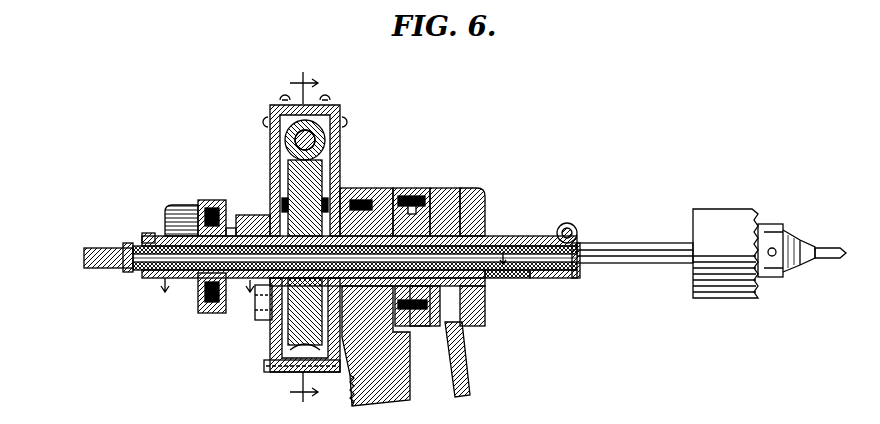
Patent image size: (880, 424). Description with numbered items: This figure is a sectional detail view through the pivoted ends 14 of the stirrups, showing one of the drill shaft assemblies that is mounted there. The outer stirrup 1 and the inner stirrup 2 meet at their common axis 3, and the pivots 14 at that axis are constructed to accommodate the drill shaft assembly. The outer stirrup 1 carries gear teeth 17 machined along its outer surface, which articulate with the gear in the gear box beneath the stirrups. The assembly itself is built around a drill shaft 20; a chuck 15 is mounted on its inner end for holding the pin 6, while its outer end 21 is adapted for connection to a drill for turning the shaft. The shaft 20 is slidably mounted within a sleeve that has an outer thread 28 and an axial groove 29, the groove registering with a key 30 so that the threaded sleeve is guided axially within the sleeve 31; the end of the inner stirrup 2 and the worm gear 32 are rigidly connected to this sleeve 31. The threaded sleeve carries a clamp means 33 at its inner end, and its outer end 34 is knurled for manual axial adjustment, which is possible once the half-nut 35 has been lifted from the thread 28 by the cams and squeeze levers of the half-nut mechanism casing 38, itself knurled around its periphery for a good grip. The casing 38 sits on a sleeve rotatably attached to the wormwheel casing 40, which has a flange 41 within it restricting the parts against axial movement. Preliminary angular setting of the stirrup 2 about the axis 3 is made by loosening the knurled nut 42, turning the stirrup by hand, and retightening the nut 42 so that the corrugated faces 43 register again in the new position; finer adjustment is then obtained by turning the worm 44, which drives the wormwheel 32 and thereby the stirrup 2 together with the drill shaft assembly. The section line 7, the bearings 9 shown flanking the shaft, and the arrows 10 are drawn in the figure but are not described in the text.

The outer stirrup 1 is at (412, 392).
The inner stirrup 2 is at (470, 364).
The common axis 3 is at (511, 278).
The pin 6 is at (828, 247).
The section line 7- 7 is at (296, 237).
The bearings 9 is at (212, 200).
The direction arrows 10 is at (205, 293).
The pivots 14 is at (378, 194).
The chuck 15 is at (737, 218).
The gear teeth 17 is at (350, 396).
The drill shaft 20 is at (630, 264).
The outer end 21 is at (104, 266).
The outer thread 28 is at (522, 244).
The axial groove 29 is at (533, 278).
The key 30 is at (276, 328).
The sleeve 31 is at (486, 236).
The worm gear 32 is at (323, 186).
The clamp means 33 is at (578, 231).
The knurled outer end 34 is at (148, 233).
The half-nut 35 is at (226, 228).
The half-nut mechanism casing 38 is at (204, 205).
The wormwheel casing 40 is at (272, 154).
The flange 41 is at (257, 303).
The knurled nut 42 is at (479, 188).
The corrugated faces 43 is at (414, 192).
The worm 44 is at (318, 136).